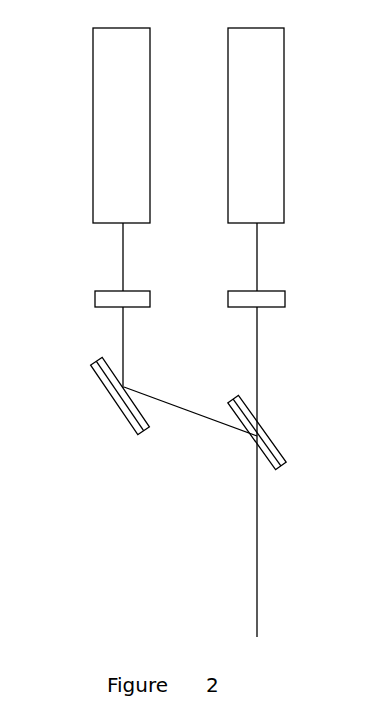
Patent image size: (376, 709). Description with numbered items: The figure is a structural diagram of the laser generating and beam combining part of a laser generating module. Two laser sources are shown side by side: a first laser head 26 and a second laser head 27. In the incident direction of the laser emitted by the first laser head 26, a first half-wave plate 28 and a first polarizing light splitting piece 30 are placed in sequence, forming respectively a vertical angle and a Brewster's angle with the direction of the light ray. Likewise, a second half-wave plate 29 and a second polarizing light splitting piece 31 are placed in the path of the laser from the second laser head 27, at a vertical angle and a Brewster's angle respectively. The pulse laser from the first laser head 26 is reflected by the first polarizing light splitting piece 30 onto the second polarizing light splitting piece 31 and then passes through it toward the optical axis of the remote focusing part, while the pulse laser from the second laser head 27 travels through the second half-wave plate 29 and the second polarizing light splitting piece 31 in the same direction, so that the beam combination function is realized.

The first laser head 26 is at (121, 125).
The second laser head 27 is at (256, 125).
The first half-wave plate 28 is at (94, 300).
The second half-wave plate 29 is at (276, 308).
The first polarizing light splitting piece 30 is at (103, 392).
The second polarizing light splitting piece 31 is at (283, 447).